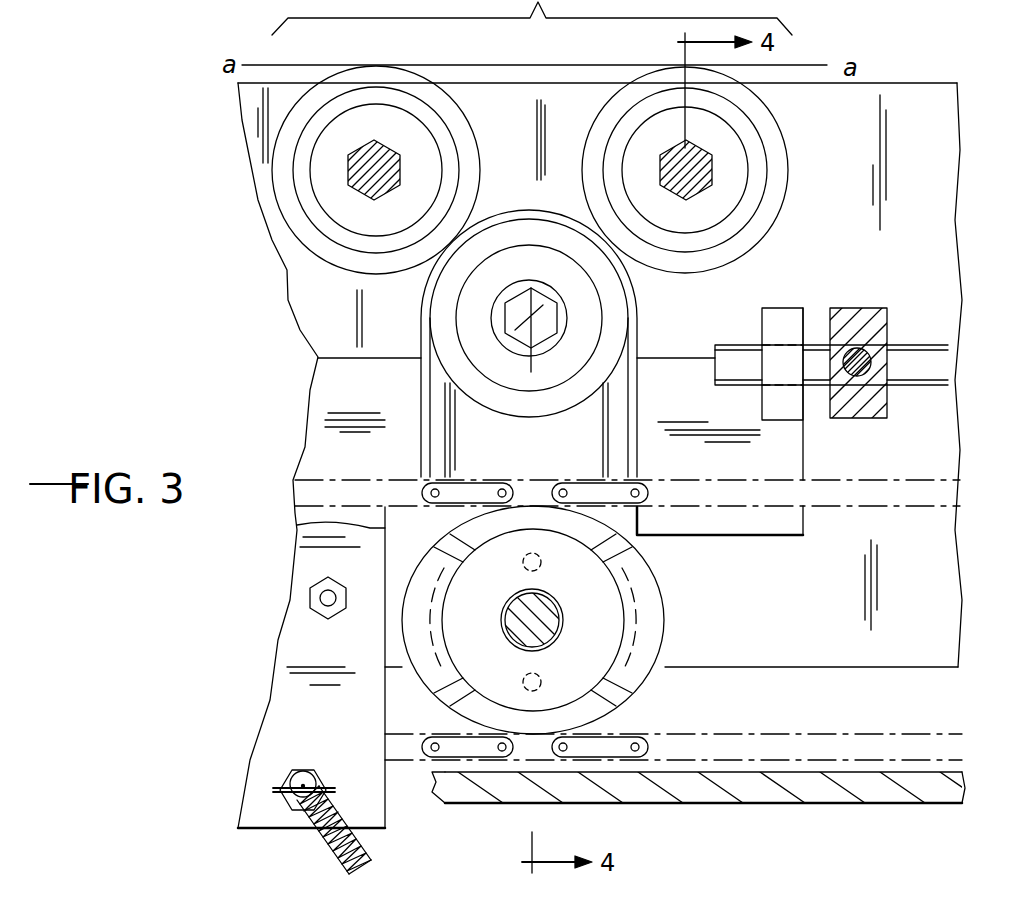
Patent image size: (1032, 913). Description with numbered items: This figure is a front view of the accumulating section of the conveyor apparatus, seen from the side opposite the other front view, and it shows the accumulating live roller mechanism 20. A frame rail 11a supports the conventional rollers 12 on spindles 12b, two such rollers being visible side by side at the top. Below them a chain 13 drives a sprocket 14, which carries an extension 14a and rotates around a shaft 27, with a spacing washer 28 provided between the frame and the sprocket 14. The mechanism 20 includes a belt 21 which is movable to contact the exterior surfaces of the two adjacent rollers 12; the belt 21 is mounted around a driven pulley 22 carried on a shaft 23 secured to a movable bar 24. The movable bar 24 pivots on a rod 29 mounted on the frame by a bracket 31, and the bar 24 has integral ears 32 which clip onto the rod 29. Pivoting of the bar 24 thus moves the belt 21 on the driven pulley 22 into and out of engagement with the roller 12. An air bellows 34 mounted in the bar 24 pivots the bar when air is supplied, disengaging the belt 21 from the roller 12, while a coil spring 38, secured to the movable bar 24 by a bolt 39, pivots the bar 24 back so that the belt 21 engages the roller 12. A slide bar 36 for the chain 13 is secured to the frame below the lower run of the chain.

The frame rail 11a is at (812, 211).
The roller 12 is at (463, 115).
The spindle 12b is at (350, 172).
The chain 13 is at (480, 492).
The sprocket 14 is at (633, 558).
The extension 14a is at (567, 641).
The accumulating live roller mechanism 20 is at (652, 376).
The belt 21 is at (503, 213).
The driven pulley 22 is at (613, 313).
The shaft 23 is at (508, 317).
The movable bar 24 is at (318, 387).
The shaft 27 is at (543, 620).
The spacing washer 28 is at (590, 588).
The rod 29 is at (730, 345).
The bracket 31 is at (862, 308).
The ear 32 is at (792, 308).
The air bellows 34 is at (298, 533).
The slide bar 36 is at (698, 800).
The coil spring 38 is at (323, 845).
The bolt 39 is at (302, 758).